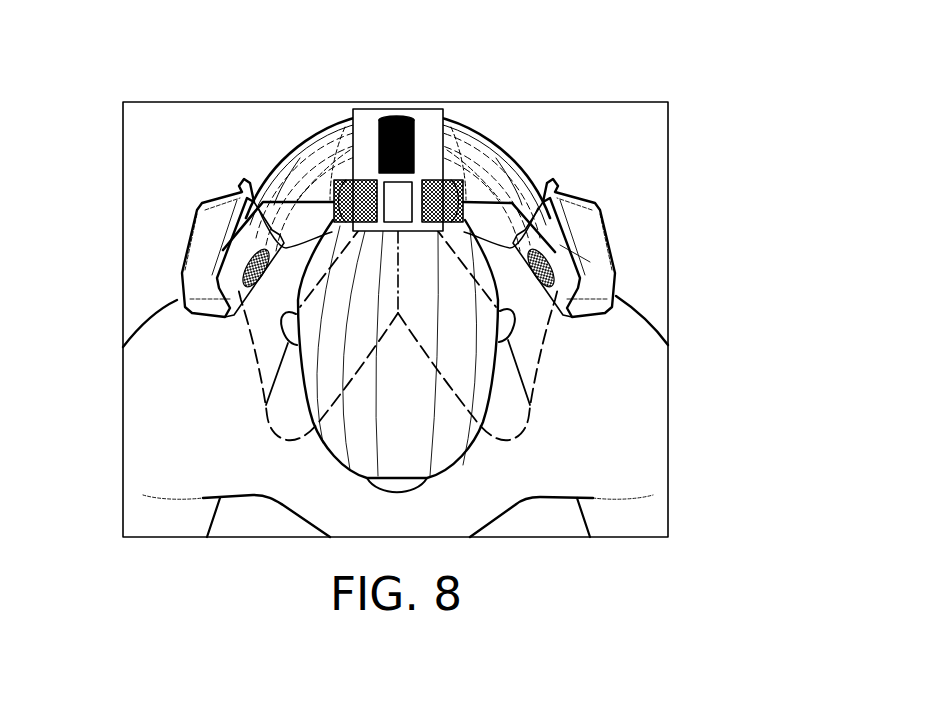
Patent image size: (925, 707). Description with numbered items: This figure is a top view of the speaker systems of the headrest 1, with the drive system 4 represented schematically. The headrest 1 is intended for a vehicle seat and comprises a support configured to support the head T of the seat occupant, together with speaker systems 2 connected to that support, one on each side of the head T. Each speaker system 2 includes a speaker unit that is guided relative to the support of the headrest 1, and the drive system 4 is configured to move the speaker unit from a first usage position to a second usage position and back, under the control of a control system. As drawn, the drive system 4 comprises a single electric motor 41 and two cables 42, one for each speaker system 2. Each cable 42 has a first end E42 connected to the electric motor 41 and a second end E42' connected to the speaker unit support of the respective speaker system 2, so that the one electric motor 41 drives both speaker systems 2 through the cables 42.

The headrest 1 is at (585, 123).
The speaker system 2 is at (156, 190).
The drive system 4 is at (407, 63).
The electric motor 41 is at (418, 90).
The cable 42 is at (257, 154).
The first end E42 is at (407, 128).
The second end E42' is at (644, 246).
The head T is at (310, 482).